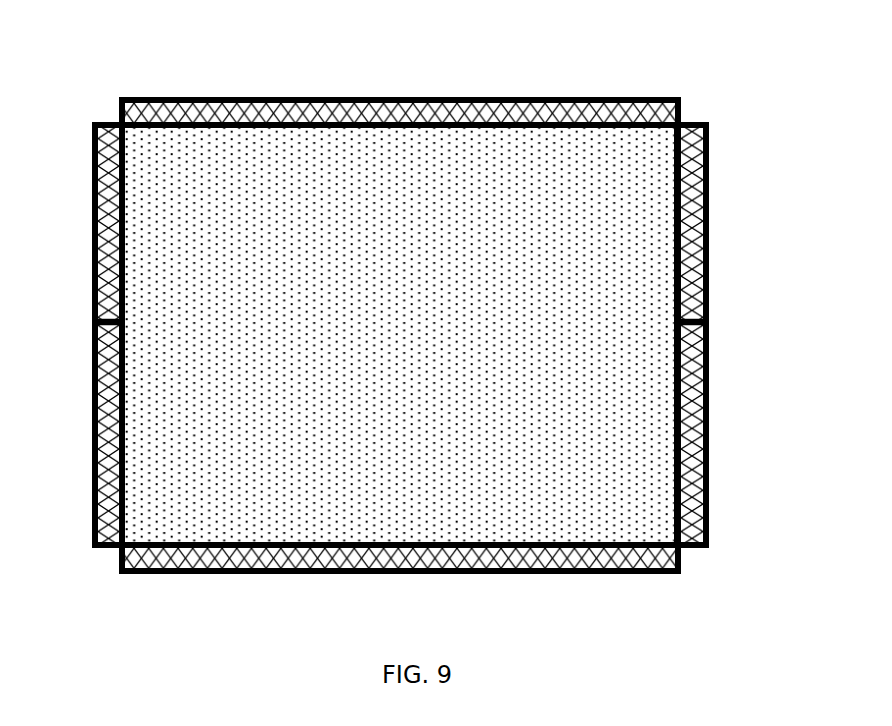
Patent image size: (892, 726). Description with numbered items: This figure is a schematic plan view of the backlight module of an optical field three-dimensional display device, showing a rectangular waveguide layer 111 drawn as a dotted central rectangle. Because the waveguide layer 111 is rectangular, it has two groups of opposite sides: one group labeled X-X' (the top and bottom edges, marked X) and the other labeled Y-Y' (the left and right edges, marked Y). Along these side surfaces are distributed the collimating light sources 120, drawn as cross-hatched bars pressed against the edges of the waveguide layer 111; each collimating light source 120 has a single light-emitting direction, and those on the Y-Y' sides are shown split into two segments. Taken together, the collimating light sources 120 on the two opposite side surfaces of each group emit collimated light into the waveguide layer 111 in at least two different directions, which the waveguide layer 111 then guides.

The waveguide layer 111 is at (488, 155).
The collimating light source 120 is at (570, 112).
The opposite sides X-X' X is at (429, 344).
The opposite sides Y-Y' Y is at (403, 303).